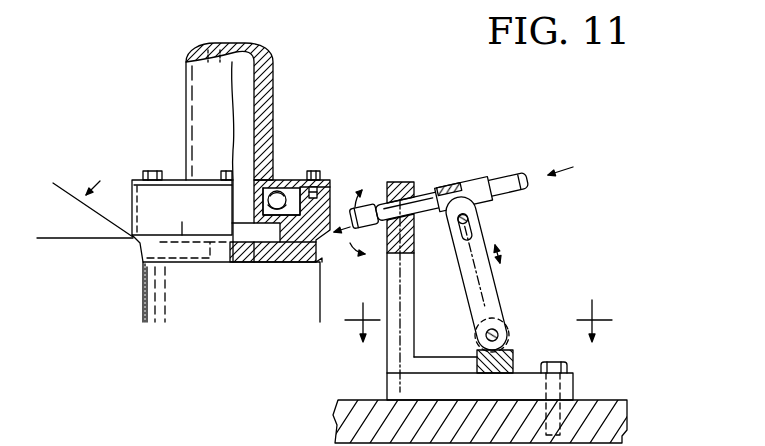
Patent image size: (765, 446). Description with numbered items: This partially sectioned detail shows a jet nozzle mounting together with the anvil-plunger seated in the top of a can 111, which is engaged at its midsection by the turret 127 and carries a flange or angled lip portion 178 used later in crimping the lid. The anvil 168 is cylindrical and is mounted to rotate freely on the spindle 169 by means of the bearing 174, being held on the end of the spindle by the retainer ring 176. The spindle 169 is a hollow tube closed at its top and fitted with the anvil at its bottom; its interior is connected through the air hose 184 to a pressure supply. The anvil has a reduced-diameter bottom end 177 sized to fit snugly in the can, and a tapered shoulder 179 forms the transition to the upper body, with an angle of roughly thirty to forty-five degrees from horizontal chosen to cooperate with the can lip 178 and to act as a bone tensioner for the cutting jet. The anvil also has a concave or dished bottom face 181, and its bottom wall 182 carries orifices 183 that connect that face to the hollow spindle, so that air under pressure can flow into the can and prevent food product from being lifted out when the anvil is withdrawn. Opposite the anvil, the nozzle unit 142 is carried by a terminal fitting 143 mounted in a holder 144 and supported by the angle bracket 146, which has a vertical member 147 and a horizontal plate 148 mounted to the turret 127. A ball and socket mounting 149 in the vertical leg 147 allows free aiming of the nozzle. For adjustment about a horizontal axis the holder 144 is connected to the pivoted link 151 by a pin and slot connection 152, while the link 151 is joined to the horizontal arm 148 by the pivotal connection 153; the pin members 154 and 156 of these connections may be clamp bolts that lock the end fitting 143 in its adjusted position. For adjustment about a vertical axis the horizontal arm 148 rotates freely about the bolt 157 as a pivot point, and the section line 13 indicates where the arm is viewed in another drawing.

The can 111 is at (141, 298).
The turret 127 is at (618, 423).
The section line 13- 13 is at (477, 323).
The nozzle unit 142 is at (362, 236).
The terminal fitting 143 is at (427, 200).
The holder 144 is at (458, 182).
The angle bracket 146 is at (418, 328).
The vertical member 147 is at (400, 292).
The horizontal plate 148 is at (430, 386).
The ball and socket mounting 149 is at (398, 180).
The pivoted link 151 is at (480, 288).
The pin and slot connection 152 is at (480, 231).
The pivotal connection 153 is at (512, 337).
The pin member 154 is at (470, 220).
The pin member 156 is at (496, 322).
The bolt 157 is at (567, 365).
The anvil 168 is at (322, 205).
The spindle 169 is at (268, 93).
The bearing 174 is at (282, 186).
The retainer ring 176 is at (296, 188).
The bottom end 177 is at (295, 256).
The angled lip portion 178 is at (140, 234).
The tapered shoulder 179 is at (160, 233).
The concave bottom face 181 is at (239, 256).
The bottom wall 182 is at (233, 226).
The orifices 183 is at (247, 258).
The air hose 184 is at (513, 180).